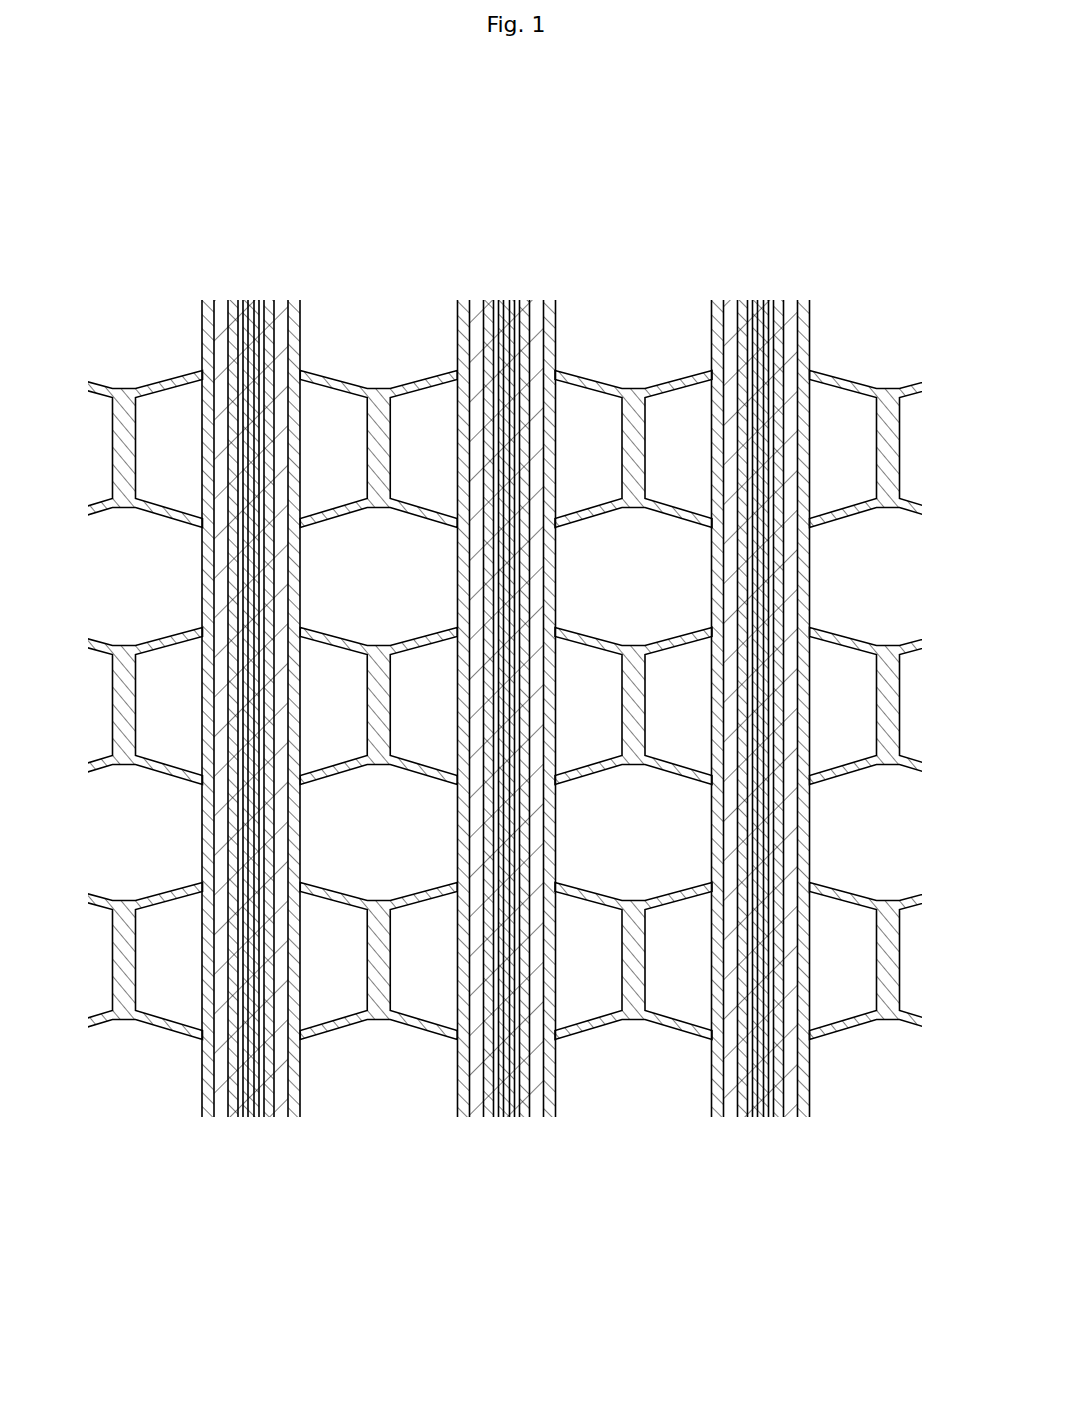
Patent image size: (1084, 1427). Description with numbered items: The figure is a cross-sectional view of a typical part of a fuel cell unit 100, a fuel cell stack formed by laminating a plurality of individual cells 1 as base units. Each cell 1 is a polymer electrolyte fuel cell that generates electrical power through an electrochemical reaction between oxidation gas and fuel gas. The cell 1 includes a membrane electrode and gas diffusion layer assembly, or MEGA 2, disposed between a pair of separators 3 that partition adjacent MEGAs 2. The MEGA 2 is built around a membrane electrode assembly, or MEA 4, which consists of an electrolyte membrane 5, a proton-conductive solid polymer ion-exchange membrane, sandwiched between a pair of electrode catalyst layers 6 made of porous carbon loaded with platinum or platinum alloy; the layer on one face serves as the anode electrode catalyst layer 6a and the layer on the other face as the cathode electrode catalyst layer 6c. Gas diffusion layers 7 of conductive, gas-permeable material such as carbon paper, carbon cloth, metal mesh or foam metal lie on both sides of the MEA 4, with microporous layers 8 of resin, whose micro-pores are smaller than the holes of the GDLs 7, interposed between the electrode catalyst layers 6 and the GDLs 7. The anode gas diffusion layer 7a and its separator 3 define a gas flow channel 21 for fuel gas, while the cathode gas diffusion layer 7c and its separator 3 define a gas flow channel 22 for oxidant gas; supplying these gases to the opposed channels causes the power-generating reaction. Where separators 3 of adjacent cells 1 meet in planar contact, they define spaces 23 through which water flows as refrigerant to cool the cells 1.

The fuel cell unit 100 is at (866, 140).
The cell 1 is at (278, 121).
The membrane electrode and gas diffusion layer assembly (MEGA) 2 is at (305, 163).
The separator 3 is at (432, 383).
The membrane electrode assembly (MEA) 4 is at (413, 200).
The electrolyte membrane 5 is at (505, 300).
The electrode catalyst layer 6 is at (515, 709).
The anode electrode catalyst layer 6a is at (494, 300).
The cathode electrode catalyst layer 6c is at (519, 300).
The gas diffusion layer (GDL) 7 is at (515, 708).
The anode gas diffusion layer (An-GDL) 7a is at (470, 300).
The cathode gas diffusion layer (Ca-GDL) 7c is at (543, 300).
The microporous layer (MPL) 8 is at (484, 300).
The gas flow channel 21 is at (163, 458).
The gas flow channel 22 is at (313, 458).
The space 23 is at (363, 591).